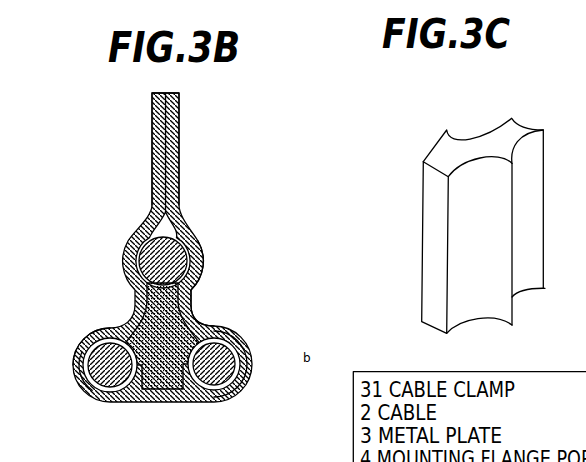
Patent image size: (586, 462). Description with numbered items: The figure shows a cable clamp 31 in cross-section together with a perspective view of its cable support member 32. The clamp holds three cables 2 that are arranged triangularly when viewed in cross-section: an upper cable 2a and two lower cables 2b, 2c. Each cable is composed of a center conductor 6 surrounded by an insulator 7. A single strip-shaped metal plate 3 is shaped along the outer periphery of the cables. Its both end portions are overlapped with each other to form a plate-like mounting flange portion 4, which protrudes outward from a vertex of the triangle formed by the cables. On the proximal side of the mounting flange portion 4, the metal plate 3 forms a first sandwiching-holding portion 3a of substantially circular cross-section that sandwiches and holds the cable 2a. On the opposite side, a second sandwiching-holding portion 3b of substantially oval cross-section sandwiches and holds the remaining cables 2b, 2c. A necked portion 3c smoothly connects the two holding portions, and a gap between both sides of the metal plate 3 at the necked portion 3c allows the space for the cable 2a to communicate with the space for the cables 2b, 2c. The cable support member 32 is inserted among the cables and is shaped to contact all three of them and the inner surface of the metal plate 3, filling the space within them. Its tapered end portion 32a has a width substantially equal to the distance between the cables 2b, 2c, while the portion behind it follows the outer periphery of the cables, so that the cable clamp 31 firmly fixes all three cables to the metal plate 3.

In FIG. 3B, the cable clamp 31 is at (58, 87).
In FIG. 3B, the cables 2 is at (139, 234).
In FIG. 3B, the cable 2a is at (134, 262).
In FIG. 3B, the cable 2b is at (115, 399).
In FIG. 3B, the cable 2c is at (212, 398).
In FIG. 3B, the metal plate 3 is at (194, 227).
In FIG. 3B, the first sandwiching-holding portion 3a is at (205, 258).
In FIG. 3B, the second sandwiching-holding portion 3b is at (254, 358).
In FIG. 3B, the necked portion 3c is at (192, 297).
In FIG. 3B, the mounting flange portion 4 is at (180, 132).
In FIG. 3B, the center conductor 6 is at (76, 356).
In FIG. 3B, the insulator 7 is at (82, 382).
In FIG. 3B, the cable support member 32 is at (160, 392).
In FIG. 3C, the cable support member 32 is at (407, 117).
In FIG. 3C, the end portion 32a is at (433, 243).